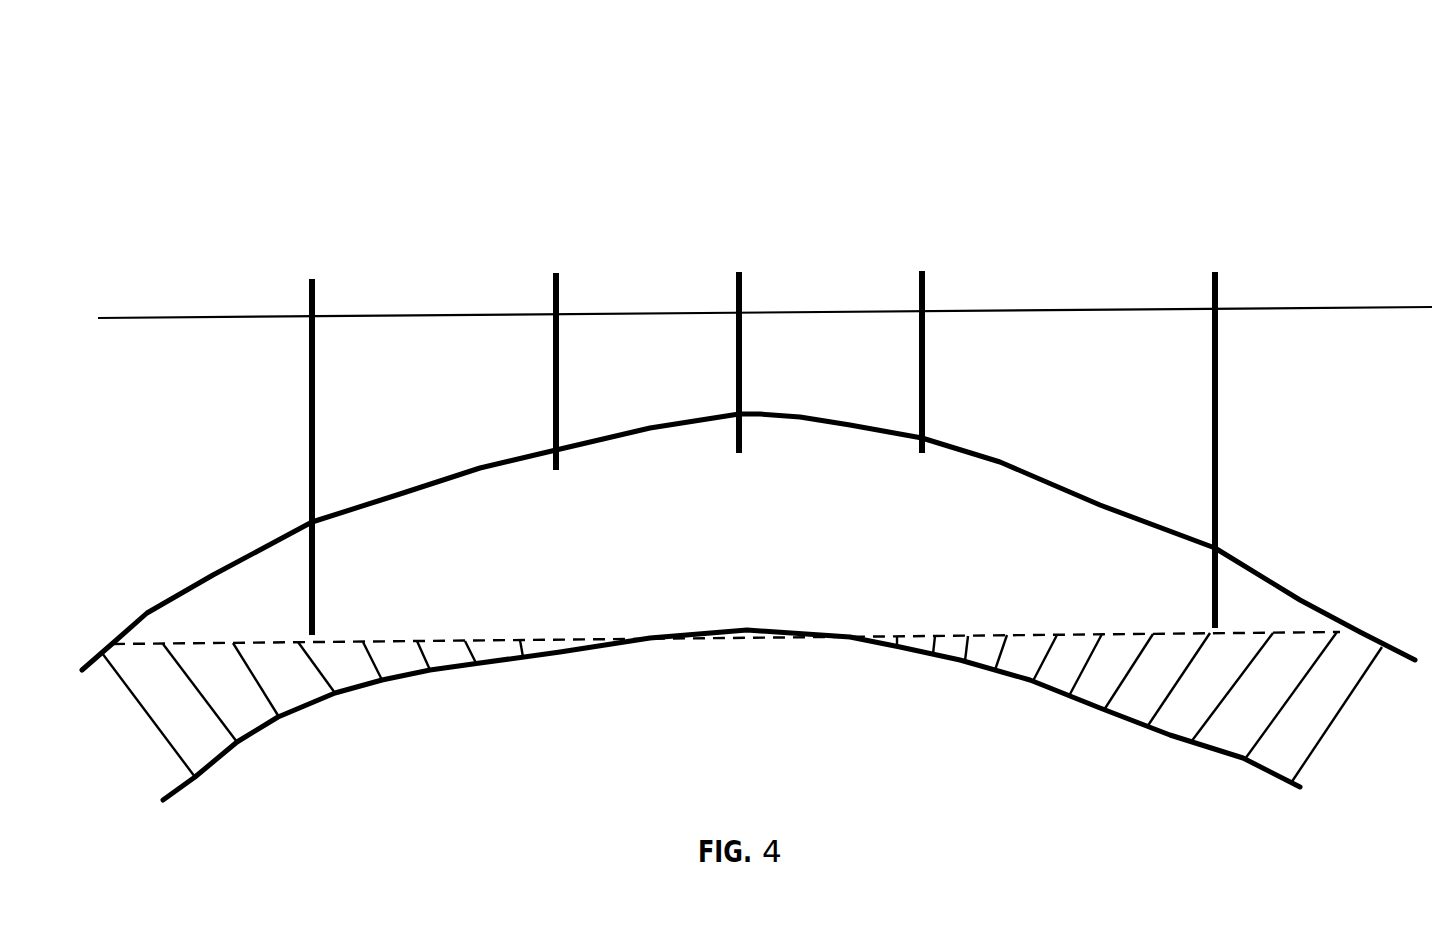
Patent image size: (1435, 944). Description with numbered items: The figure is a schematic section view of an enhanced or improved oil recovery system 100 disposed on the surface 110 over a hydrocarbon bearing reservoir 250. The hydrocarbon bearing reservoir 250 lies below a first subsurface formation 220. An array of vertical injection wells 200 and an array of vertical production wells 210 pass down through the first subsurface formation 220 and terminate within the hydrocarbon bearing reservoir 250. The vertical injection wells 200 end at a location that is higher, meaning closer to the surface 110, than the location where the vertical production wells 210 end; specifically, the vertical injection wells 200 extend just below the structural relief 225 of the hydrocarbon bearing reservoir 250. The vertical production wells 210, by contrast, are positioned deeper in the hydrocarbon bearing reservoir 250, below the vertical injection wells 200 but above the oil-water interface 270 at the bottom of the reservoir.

The enhanced oil recovery system 100 is at (930, 158).
The surface 110 is at (208, 318).
The vertical injection wells 200 is at (559, 294).
The vertical production wells 210 is at (315, 295).
The first subsurface formation 220 is at (229, 428).
The structural relief 225 is at (362, 503).
The hydrocarbon bearing reservoir 250 is at (467, 602).
The oil-water interface 270 is at (1252, 633).